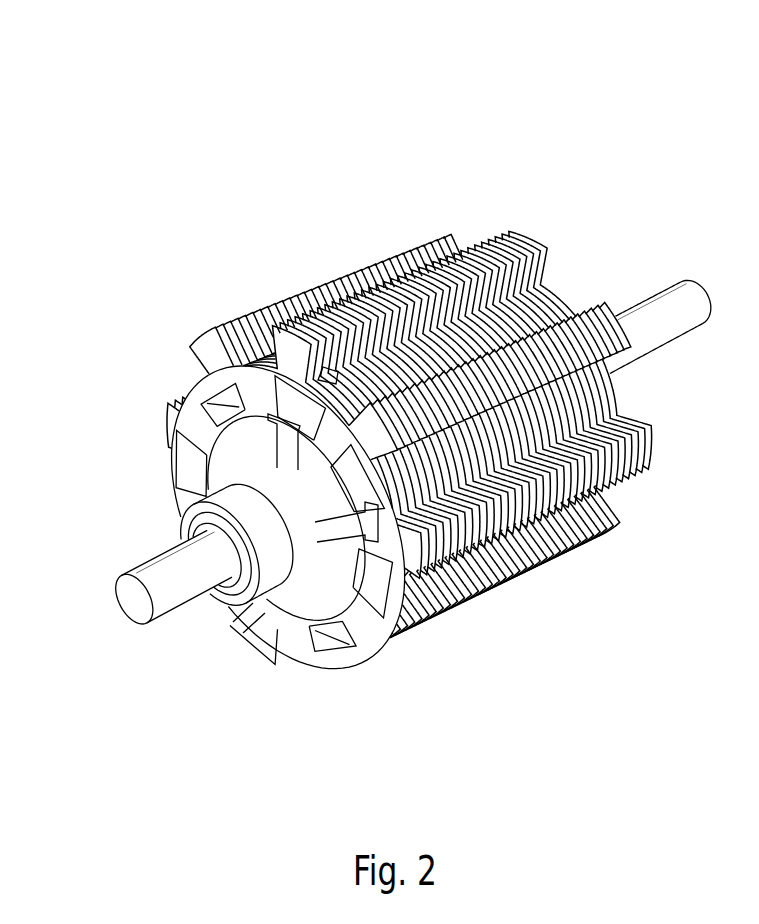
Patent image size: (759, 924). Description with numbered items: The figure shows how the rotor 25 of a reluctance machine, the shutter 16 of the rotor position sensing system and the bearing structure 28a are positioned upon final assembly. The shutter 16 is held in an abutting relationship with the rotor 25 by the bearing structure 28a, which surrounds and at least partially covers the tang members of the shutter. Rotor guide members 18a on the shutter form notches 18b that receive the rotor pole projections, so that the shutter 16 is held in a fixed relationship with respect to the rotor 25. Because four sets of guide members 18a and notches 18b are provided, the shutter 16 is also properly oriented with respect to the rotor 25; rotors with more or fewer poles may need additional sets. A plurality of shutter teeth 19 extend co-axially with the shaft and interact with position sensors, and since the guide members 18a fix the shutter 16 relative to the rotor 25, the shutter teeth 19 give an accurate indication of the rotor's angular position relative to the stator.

The rotor 25 is at (487, 151).
The shutter 16 is at (205, 385).
The guide members 18a is at (234, 392).
The notches 18b is at (318, 372).
The shutter teeth 19 is at (269, 672).
The bearing structure 28a is at (185, 528).